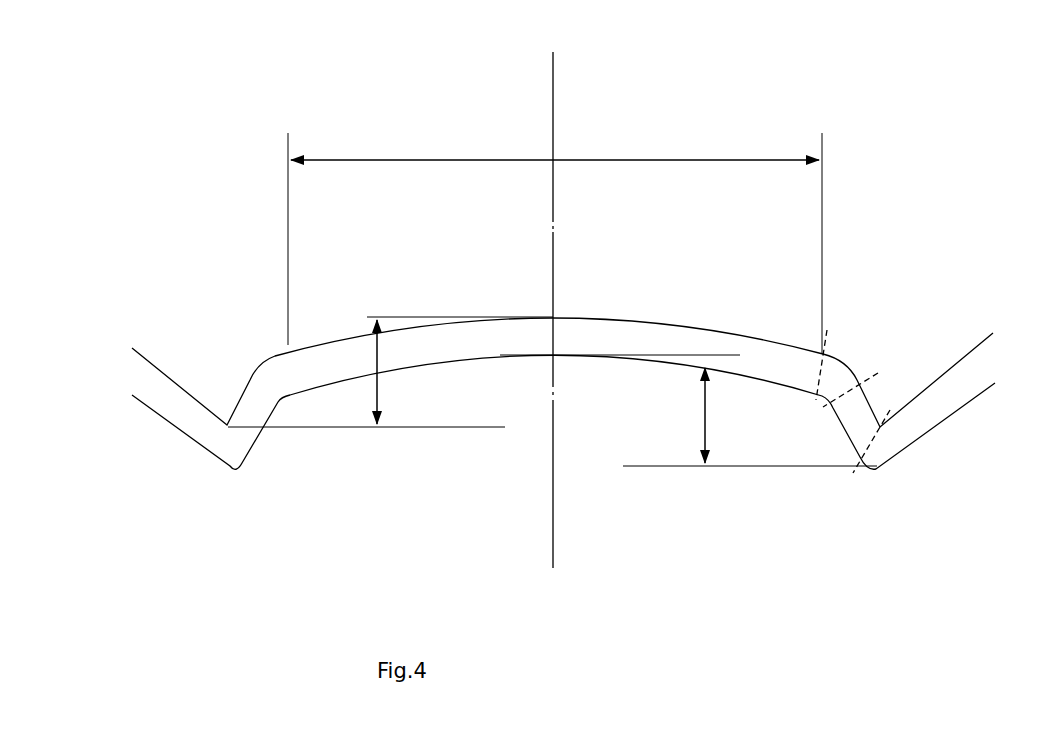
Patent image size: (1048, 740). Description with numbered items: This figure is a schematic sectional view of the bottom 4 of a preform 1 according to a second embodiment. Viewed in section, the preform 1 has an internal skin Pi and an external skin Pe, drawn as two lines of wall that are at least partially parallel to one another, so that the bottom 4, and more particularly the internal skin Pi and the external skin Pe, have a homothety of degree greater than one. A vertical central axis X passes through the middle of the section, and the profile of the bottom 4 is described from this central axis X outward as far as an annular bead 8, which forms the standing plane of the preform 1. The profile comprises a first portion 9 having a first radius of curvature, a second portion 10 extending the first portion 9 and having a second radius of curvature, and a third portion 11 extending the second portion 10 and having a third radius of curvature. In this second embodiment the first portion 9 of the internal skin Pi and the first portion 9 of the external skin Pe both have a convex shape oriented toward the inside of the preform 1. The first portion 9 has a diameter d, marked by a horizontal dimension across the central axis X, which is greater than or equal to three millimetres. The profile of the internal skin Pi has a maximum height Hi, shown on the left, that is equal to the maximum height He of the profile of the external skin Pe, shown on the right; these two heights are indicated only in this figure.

The preform 1 is at (536, 421).
The bottom 4 is at (536, 421).
The annular bead 8 is at (237, 483).
The first portion 9 is at (645, 307).
The second portion 10 is at (853, 350).
The third portion 11 is at (882, 395).
The central axis X is at (562, 101).
The diameter d is at (555, 243).
The internal skin Pi is at (157, 356).
The external skin Pe is at (134, 411).
The maximum height Hi is at (390, 372).
The maximum height He is at (688, 410).